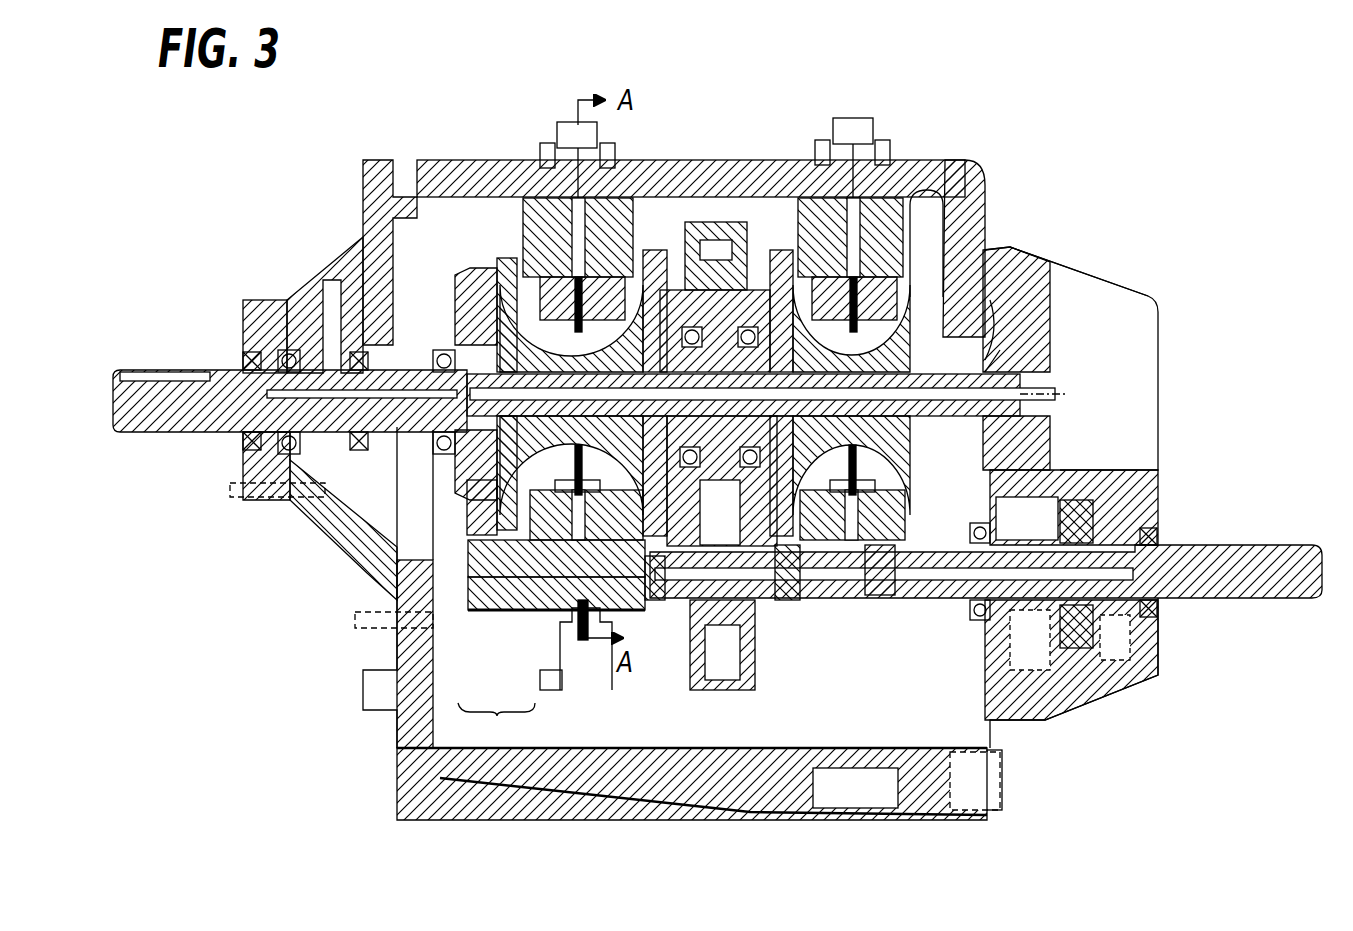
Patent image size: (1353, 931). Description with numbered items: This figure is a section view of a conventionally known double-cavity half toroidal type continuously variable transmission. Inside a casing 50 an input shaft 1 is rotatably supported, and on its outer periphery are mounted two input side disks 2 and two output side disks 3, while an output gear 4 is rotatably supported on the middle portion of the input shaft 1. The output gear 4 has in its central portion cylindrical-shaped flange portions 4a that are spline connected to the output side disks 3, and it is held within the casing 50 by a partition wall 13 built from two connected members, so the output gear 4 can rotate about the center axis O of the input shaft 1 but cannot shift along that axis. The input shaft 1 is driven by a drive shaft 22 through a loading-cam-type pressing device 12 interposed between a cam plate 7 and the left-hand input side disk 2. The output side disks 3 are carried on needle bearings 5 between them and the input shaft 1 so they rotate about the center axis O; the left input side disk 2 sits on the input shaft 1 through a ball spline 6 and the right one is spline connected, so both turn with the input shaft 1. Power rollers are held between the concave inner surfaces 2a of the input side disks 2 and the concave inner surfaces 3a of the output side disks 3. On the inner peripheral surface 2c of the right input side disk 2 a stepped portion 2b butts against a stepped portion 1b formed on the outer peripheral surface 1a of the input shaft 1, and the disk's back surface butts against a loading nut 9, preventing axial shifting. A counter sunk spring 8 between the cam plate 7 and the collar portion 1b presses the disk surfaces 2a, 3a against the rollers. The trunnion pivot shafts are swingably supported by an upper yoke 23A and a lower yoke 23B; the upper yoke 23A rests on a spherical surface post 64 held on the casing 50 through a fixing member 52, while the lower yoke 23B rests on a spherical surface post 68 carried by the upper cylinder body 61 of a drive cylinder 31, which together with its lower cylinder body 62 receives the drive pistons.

The input shaft 1 is at (1085, 462).
The outer peripheral surface 1a is at (985, 430).
The stepped portion 1b is at (1050, 270).
The input side disk 2 is at (460, 263).
The inner surface 2a is at (457, 468).
The stepped portion 2b is at (990, 300).
The inner peripheral surface 2c is at (1000, 350).
The output side disk 3 is at (655, 300).
The inner surface 3a is at (815, 320).
The output gear 4 is at (735, 223).
The flange portion 4a is at (775, 600).
The needle bearing 5 is at (582, 425).
The ball spline 6 is at (453, 320).
The cam plate 7 is at (378, 268).
The counter sunk spring 8 is at (348, 540).
The loading nut 9 is at (995, 470).
The loading-cam-type pressing device 12 is at (437, 290).
The partition wall 13 is at (700, 225).
The drive shaft 22 is at (331, 292).
The upper yoke 23A is at (548, 255).
The lower yoke 23B is at (500, 545).
The drive cylinder 31 is at (496, 724).
The casing 50 is at (955, 165).
The fixing member 52 is at (617, 213).
The upper cylinder body 61 is at (520, 612).
The lower cylinder body 62 is at (500, 612).
The spherical surface post 64 is at (622, 262).
The spherical surface post 68 is at (615, 600).
The center axis O is at (1060, 380).